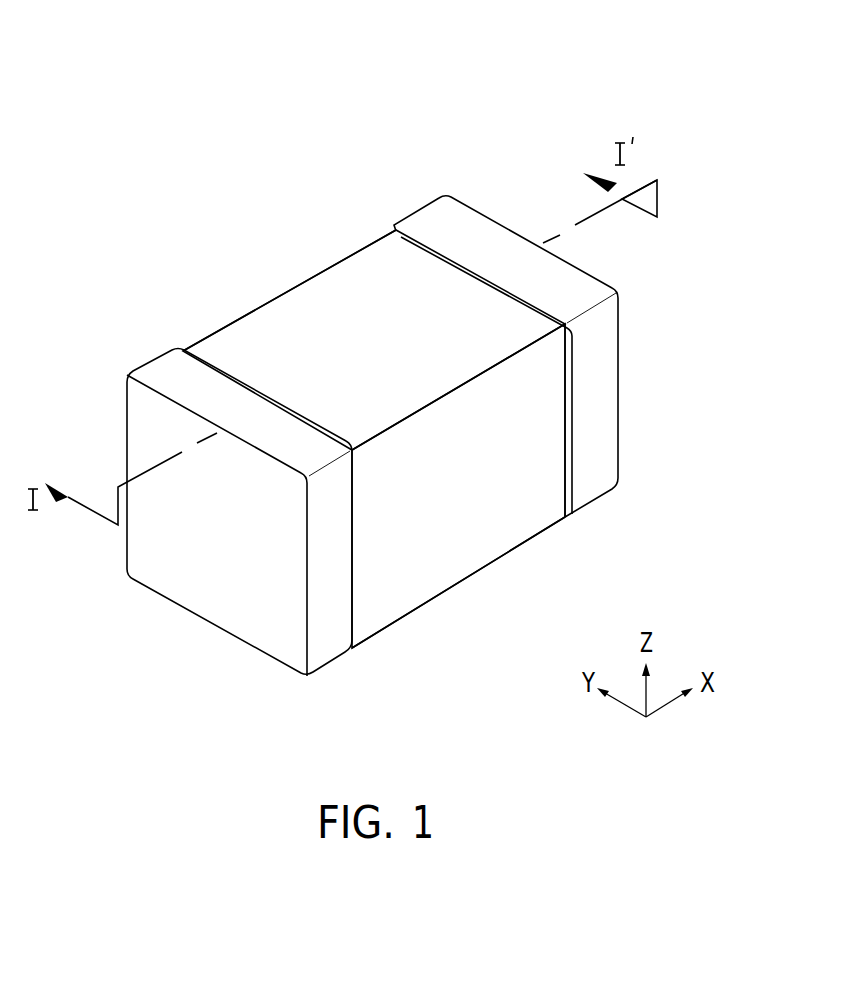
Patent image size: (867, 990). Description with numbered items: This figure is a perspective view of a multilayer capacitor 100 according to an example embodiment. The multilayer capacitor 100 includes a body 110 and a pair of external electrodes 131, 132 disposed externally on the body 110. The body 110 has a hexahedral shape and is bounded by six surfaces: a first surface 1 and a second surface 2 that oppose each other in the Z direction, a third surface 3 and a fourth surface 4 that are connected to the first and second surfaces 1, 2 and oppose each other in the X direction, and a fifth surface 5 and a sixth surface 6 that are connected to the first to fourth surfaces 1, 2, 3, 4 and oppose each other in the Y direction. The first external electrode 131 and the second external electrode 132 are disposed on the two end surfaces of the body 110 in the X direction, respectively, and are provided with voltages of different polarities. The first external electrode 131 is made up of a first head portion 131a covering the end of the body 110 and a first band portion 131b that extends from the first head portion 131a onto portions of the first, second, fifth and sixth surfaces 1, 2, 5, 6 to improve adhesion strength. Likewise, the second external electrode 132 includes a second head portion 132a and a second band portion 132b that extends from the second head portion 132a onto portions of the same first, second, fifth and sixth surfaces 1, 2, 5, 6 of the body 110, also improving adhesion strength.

The multilayer capacitor 100 is at (187, 59).
The body 110 is at (297, 310).
The first surface 1 is at (407, 593).
The second surface 2 is at (368, 285).
The third surface 3 is at (150, 564).
The fourth surface 4 is at (607, 377).
The fifth surface 5 is at (508, 528).
The sixth surface 6 is at (255, 352).
The first external electrode 131 is at (153, 263).
The first head portion 131a is at (148, 422).
The first band portion 131b is at (162, 373).
The second external electrode 132 is at (467, 79).
The second head portion 132a is at (480, 217).
The second band portion 132b is at (432, 215).